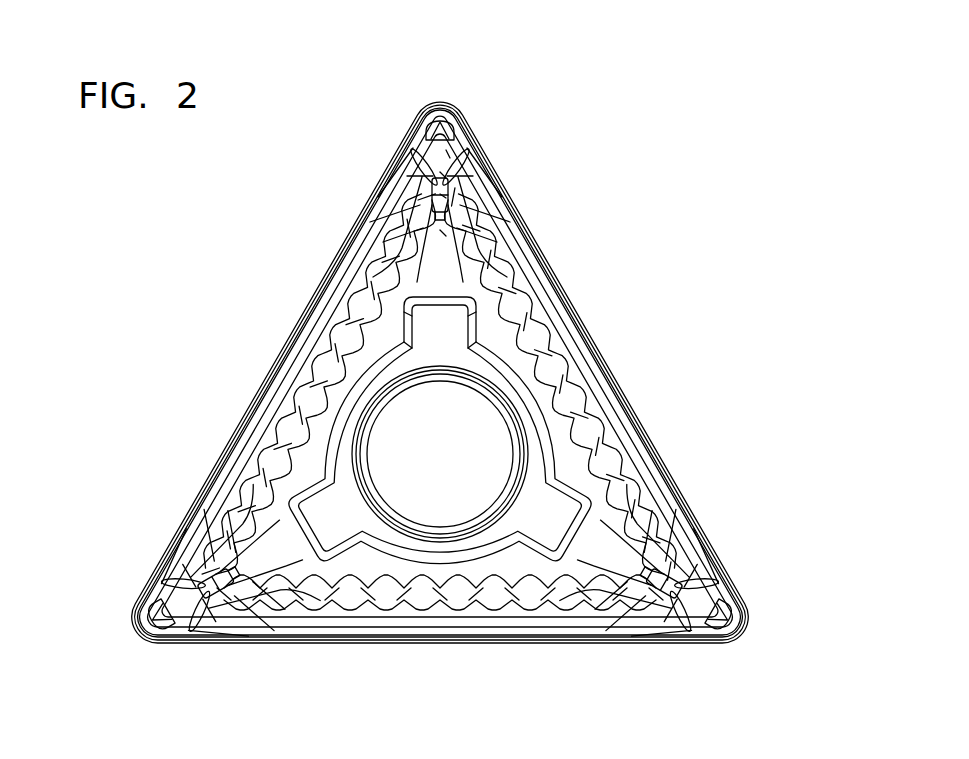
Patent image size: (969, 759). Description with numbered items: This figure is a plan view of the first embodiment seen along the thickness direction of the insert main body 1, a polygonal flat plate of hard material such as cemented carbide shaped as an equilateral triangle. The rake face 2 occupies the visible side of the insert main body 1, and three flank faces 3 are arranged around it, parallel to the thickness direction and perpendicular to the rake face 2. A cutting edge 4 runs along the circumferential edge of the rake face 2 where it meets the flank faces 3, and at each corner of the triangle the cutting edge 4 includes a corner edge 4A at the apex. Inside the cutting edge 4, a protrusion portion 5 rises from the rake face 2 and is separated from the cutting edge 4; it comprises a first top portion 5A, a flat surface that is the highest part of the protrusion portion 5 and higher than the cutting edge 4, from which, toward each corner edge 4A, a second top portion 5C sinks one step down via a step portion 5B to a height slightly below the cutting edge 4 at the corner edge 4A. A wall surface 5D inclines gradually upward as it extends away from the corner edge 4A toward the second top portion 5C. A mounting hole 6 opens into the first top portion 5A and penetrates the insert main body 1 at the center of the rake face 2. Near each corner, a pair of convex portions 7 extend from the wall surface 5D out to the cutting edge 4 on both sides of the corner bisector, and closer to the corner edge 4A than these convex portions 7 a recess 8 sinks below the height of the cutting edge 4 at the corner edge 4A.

The insert main body 1 is at (438, 373).
The rake face 2 is at (378, 256).
The flank face 3 is at (248, 408).
The cutting edge 4 is at (438, 359).
The corner edge 4A is at (440, 408).
The protrusion portion 5 is at (609, 128).
The first top portion 5A is at (440, 240).
The step portion 5B is at (448, 200).
The second top portion 5C is at (453, 178).
The wall surface 5D is at (450, 160).
The mounting hole 6 is at (380, 412).
The convex portion 7 is at (415, 170).
The recess 8 is at (455, 118).